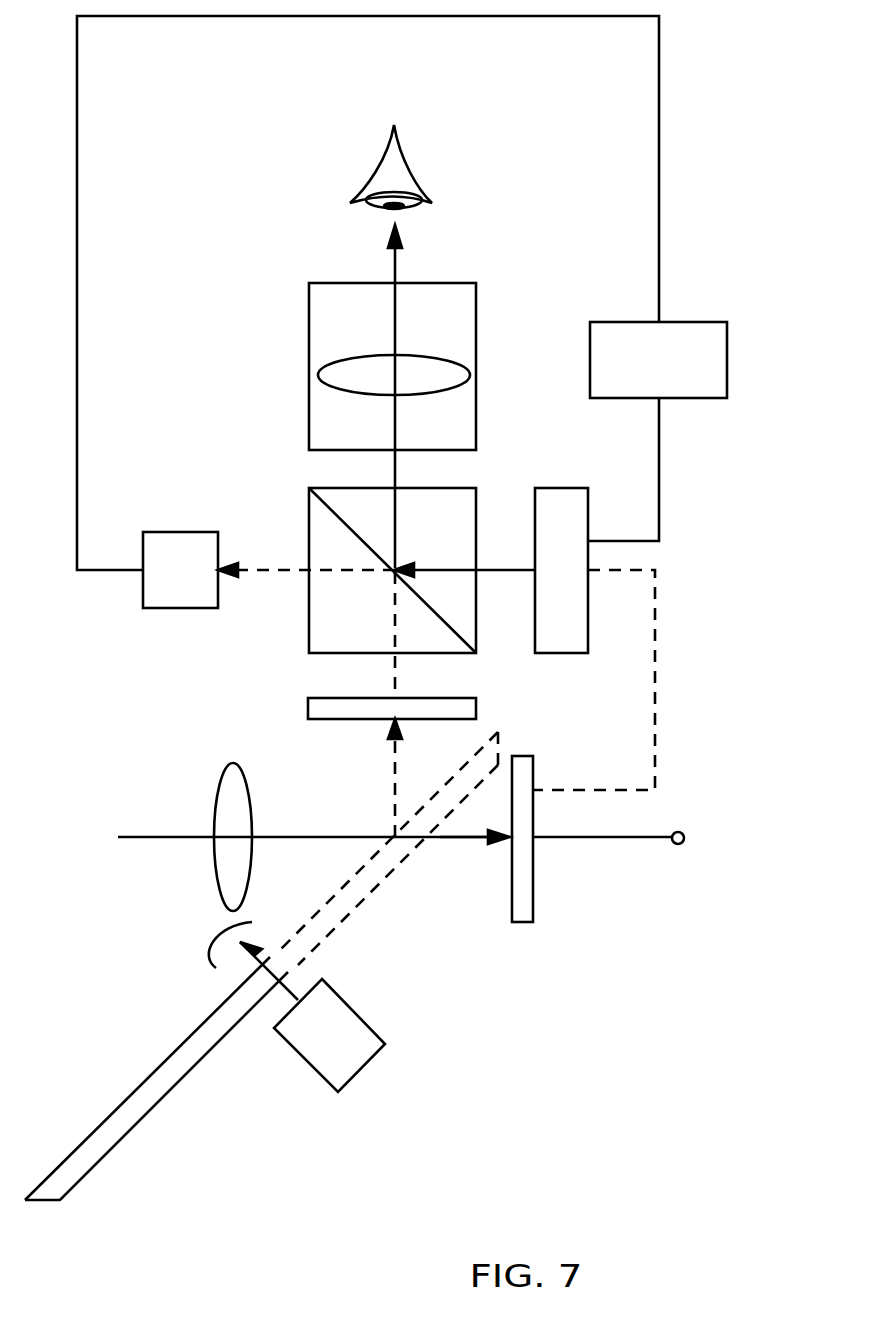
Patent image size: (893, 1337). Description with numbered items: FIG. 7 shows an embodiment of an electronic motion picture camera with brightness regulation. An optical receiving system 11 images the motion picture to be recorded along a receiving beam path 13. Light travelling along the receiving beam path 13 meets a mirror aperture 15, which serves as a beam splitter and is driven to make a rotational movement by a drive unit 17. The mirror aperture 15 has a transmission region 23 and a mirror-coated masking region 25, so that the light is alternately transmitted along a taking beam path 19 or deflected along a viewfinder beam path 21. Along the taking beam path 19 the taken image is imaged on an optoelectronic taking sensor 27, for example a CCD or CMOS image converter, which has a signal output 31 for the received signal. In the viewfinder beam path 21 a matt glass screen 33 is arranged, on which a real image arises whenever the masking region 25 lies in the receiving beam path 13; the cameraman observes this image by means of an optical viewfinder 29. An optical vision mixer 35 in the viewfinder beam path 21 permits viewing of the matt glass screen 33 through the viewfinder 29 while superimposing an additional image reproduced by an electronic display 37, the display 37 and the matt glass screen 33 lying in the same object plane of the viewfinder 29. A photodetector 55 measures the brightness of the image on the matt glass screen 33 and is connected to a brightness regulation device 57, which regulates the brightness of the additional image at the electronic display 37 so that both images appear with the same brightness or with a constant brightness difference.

The optical receiving system 11 is at (215, 800).
The receiving beam path 13 is at (316, 837).
The mirror aperture 15 is at (133, 1160).
The drive unit 17 is at (365, 1073).
The taking beam path 19 is at (445, 840).
The viewfinder beam path 21 is at (390, 478).
The transmission region 23 is at (355, 905).
The mirror-coated masking region 25 is at (190, 1060).
The optoelectronic taking sensor 27 is at (533, 890).
The optical viewfinder 29 is at (478, 305).
The signal output 31 is at (684, 840).
The matt glass screen 33 is at (306, 710).
The optical vision mixer 35 is at (309, 520).
The electronic display 37 is at (562, 487).
The photodetector 55 is at (141, 593).
The brightness regulation device 57 is at (727, 348).